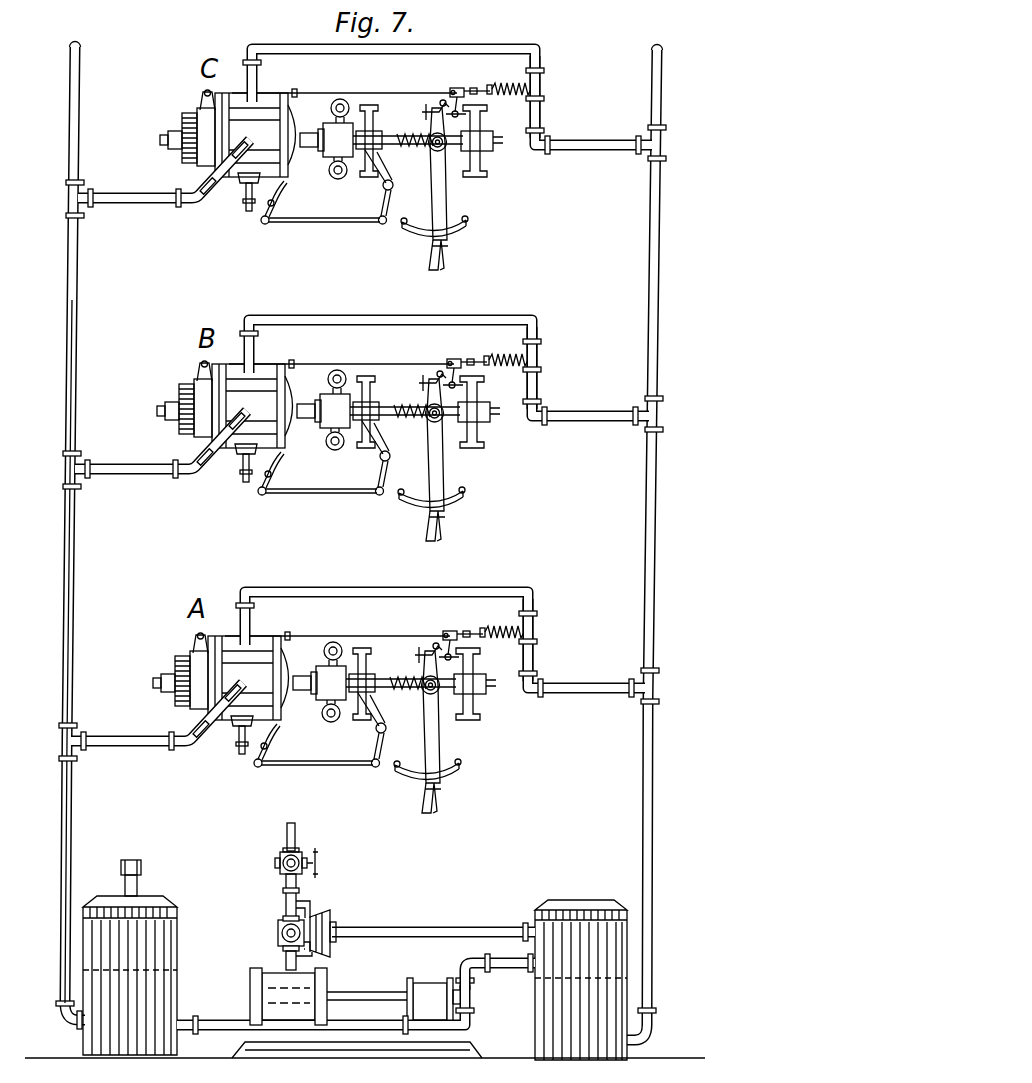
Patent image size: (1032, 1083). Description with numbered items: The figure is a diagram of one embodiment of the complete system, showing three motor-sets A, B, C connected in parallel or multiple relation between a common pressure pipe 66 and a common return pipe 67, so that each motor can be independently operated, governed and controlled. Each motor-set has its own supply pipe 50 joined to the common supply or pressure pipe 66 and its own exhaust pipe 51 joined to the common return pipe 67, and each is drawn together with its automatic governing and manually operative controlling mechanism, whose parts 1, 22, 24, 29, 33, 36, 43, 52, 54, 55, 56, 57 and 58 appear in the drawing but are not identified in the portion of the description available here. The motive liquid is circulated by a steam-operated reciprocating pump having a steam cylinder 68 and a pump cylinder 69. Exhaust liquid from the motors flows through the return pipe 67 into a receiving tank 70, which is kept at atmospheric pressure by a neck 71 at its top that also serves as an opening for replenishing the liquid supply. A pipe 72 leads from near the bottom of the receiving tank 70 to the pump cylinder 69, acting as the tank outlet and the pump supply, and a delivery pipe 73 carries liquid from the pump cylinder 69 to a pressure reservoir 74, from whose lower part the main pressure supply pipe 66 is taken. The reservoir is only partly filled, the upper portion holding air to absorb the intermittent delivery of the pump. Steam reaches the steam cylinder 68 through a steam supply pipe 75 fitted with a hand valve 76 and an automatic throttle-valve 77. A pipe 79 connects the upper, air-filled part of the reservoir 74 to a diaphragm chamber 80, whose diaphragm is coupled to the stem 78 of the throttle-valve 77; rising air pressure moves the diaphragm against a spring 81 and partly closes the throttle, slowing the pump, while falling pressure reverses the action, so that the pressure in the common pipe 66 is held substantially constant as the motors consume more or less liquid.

The machine casing 1 is at (242, 177).
The valve 22 is at (247, 208).
The hand wheel 24 is at (333, 107).
The bearing block 29 is at (490, 148).
The link 33 is at (382, 198).
The rod 36 is at (335, 219).
The lever 43 is at (437, 192).
The supply pipe 50 is at (258, 68).
The exhaust pipe 51 is at (195, 187).
The pipe 52 is at (543, 86).
The spring 54 is at (510, 84).
The link 55 is at (470, 92).
The rod 56 is at (478, 88).
The lever arm 57 is at (438, 112).
The gear 58 is at (186, 112).
The common pressure pipe 66 is at (663, 85).
The common return pipe 67 is at (70, 310).
The steam cylinder 68 is at (272, 972).
The pump cylinder 69 is at (69, 124).
The receiving tank 70 is at (182, 983).
The neck 71 is at (122, 872).
The pipe 72 is at (240, 1022).
The delivery pipe 73 is at (505, 969).
The pressure reservoir 74 is at (538, 1012).
The steam supply pipe 75 is at (298, 832).
The hand valve 76 is at (322, 858).
The automatic throttle-valve 77 is at (282, 935).
The stem 78 is at (318, 955).
The pipe 79 is at (462, 931).
The diaphragm chamber 80 is at (330, 920).
The spring 81 is at (307, 912).